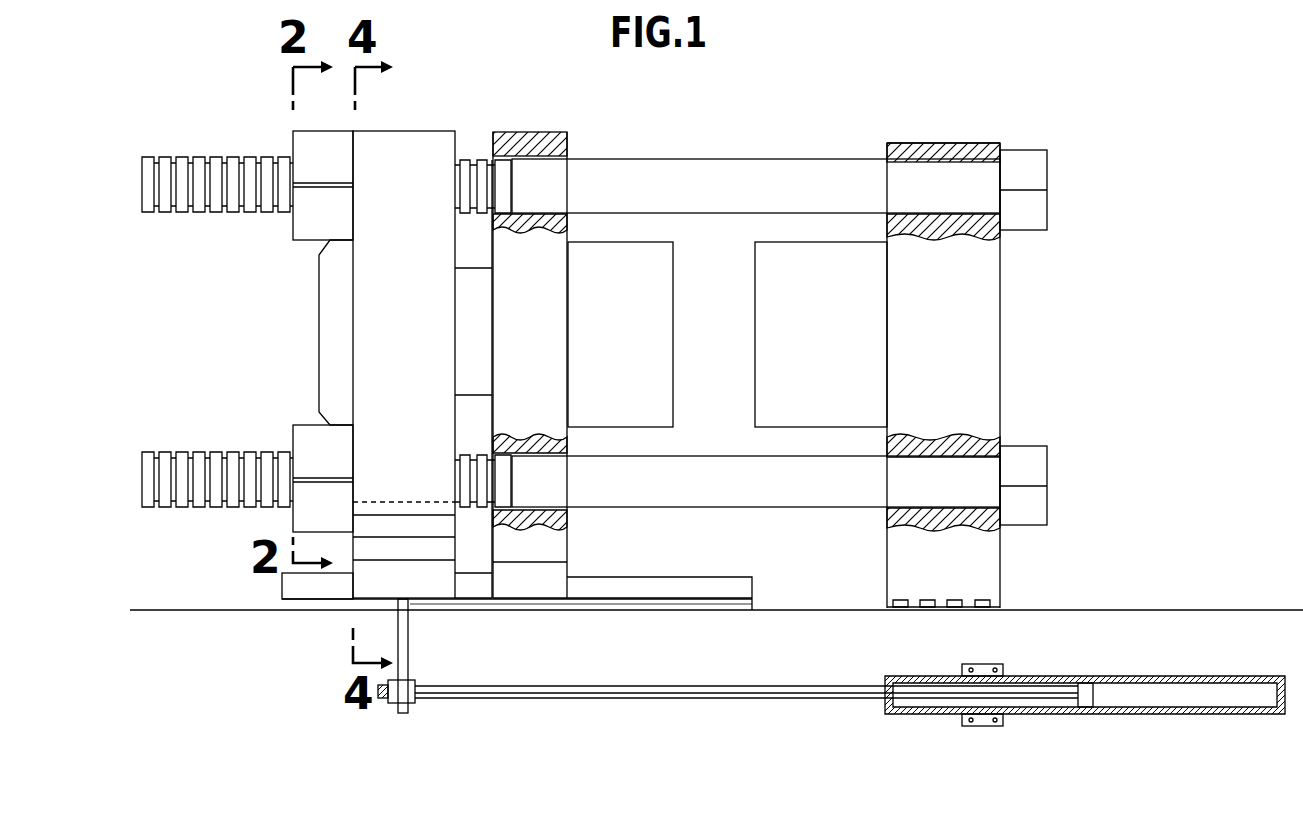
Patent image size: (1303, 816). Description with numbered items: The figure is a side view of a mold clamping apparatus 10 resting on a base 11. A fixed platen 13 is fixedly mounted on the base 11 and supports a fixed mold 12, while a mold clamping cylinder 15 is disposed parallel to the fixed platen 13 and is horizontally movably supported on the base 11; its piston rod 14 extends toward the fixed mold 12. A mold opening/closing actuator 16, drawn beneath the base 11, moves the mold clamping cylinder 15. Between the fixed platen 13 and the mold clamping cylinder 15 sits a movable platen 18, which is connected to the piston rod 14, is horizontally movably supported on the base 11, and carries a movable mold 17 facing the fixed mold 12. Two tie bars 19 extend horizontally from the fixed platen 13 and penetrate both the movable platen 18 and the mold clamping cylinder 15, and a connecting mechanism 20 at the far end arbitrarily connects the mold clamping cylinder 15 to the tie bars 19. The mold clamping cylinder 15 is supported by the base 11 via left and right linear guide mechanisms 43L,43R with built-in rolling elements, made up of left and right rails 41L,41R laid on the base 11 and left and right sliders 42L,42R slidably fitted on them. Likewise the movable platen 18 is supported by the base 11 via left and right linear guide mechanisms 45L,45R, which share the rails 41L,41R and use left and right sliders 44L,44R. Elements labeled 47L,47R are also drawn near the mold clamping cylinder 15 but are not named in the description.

The mold clamping apparatus 10 is at (1087, 127).
The base 11 is at (1167, 612).
The fixed mold 12 is at (810, 258).
The fixed platen 13 is at (928, 152).
The piston rod 14 is at (466, 285).
The mold clamping cylinder 15 is at (395, 160).
The mold opening/closing actuator 16 is at (1163, 715).
The movable mold 17 is at (610, 255).
The movable platen 18 is at (522, 140).
The tie bars 19 is at (705, 180).
The connecting mechanism 20 is at (282, 124).
The left and right rails 41L,41R is at (733, 588).
The left and right sliders 42L,42R is at (362, 586).
The left and right linear guide mechanisms 43L,43R is at (427, 614).
The left and right sliders 44L,44R is at (561, 567).
The left and right linear guide mechanisms 45L,45R is at (547, 614).
The stopper 47L,47R is at (357, 520).